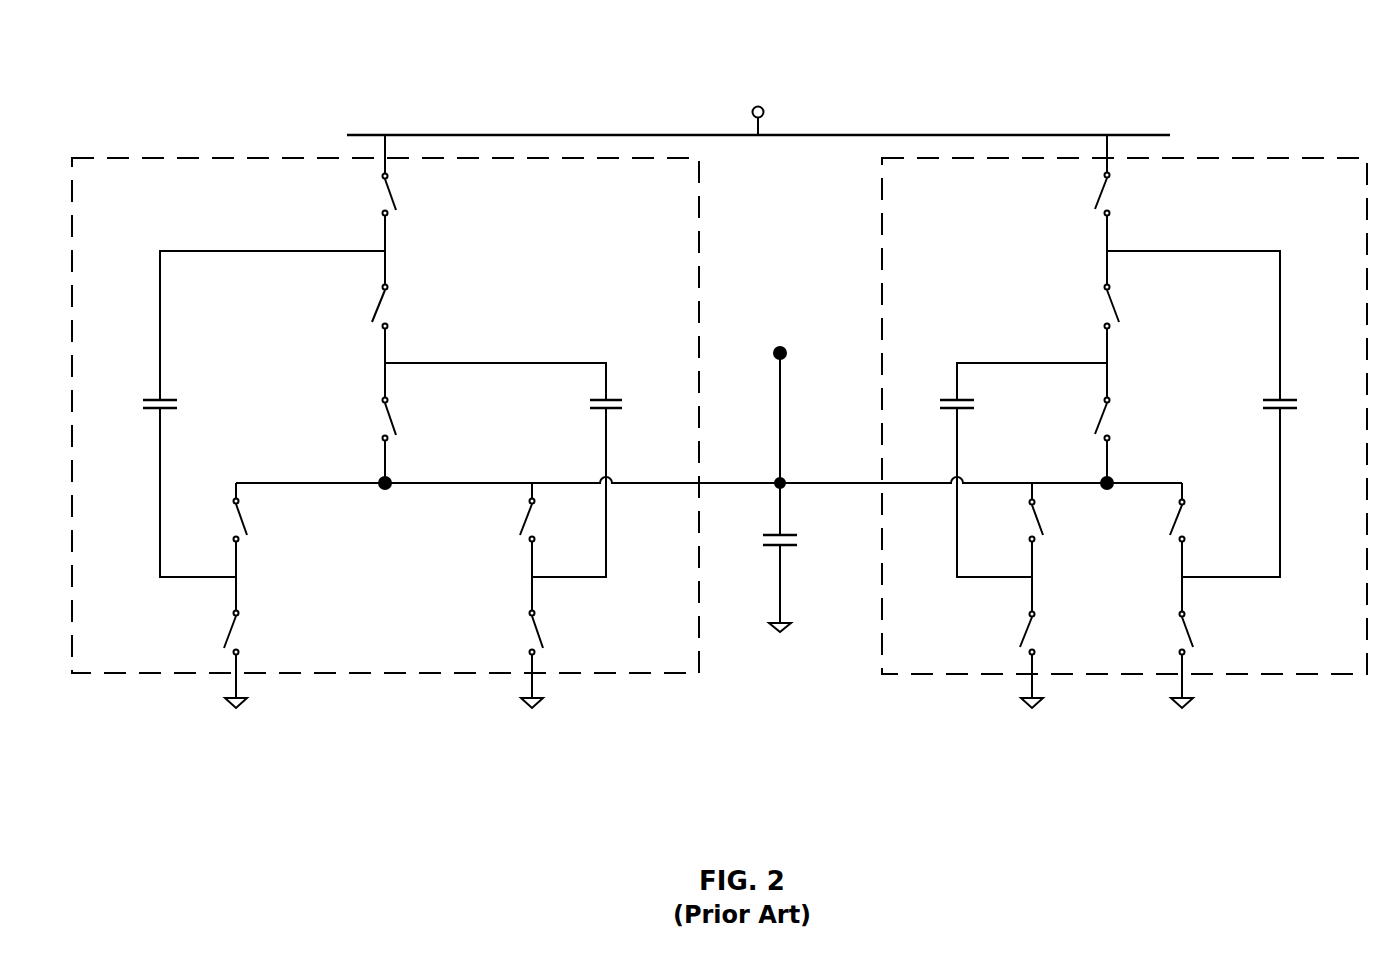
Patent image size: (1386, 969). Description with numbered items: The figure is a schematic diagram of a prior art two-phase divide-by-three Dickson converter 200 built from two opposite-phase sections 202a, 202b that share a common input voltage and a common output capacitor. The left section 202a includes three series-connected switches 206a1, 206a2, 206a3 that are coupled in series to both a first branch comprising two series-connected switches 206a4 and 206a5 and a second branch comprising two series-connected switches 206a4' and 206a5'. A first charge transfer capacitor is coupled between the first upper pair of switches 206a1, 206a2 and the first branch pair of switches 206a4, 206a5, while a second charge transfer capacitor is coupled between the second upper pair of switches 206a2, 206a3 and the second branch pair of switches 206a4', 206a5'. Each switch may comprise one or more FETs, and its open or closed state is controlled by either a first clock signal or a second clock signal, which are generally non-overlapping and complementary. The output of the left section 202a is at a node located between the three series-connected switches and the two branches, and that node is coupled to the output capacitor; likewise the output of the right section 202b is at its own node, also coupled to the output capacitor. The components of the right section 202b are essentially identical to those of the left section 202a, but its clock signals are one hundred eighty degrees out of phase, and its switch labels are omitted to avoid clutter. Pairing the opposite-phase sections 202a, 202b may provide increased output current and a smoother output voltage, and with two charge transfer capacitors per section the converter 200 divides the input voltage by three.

The two-phase divide-by-3 Dickson converter 200 is at (126, 38).
The left section 202a is at (152, 675).
The right section 202b is at (1285, 677).
The charge pump switch 206a1 is at (408, 195).
The charge pump switch 206a2 is at (363, 308).
The charge pump switch 206a3 is at (405, 427).
The charge pump switch 206a4 is at (277, 525).
The charge pump switch 206a4' is at (479, 533).
The charge pump switch 206a5 is at (192, 633).
The charge pump switch 206a5' is at (577, 633).